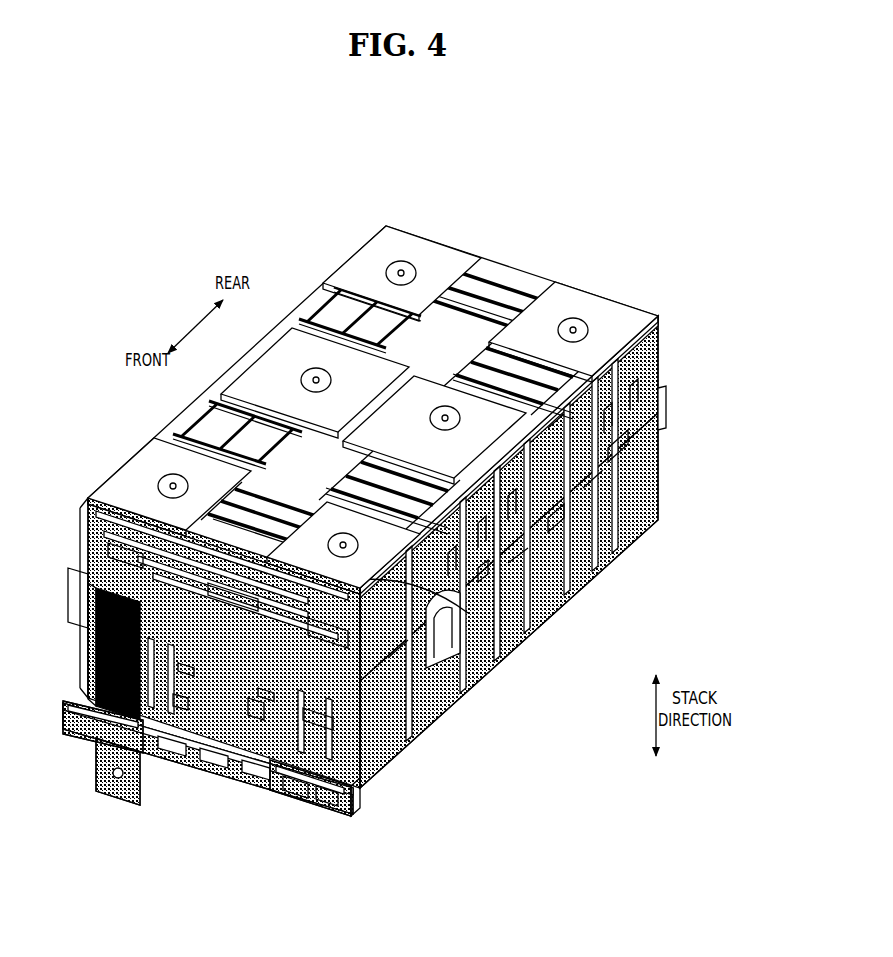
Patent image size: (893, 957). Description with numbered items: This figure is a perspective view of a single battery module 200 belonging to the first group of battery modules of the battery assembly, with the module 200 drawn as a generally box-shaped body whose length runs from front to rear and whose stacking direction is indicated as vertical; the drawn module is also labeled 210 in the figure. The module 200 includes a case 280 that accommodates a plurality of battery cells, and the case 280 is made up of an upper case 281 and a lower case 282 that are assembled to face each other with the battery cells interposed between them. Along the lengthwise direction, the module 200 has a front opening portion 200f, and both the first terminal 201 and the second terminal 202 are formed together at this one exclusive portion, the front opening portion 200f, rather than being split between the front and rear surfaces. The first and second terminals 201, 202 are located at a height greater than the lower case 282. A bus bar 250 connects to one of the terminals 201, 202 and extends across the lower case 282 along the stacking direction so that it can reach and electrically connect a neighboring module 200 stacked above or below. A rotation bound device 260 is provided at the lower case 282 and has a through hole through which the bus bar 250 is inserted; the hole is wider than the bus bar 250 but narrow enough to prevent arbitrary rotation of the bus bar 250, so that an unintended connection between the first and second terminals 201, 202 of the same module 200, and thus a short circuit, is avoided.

The battery module 200 is at (520, 256).
The housing 210 is at (367, 410).
The first terminal 201 is at (92, 498).
The second terminal 202 is at (438, 642).
The bus bar 250 is at (77, 667).
The rotation bound device 260 is at (80, 733).
The case 280 is at (705, 347).
The upper case 281 is at (645, 368).
The lower case 282 is at (648, 471).
The front opening portion 200f is at (147, 808).